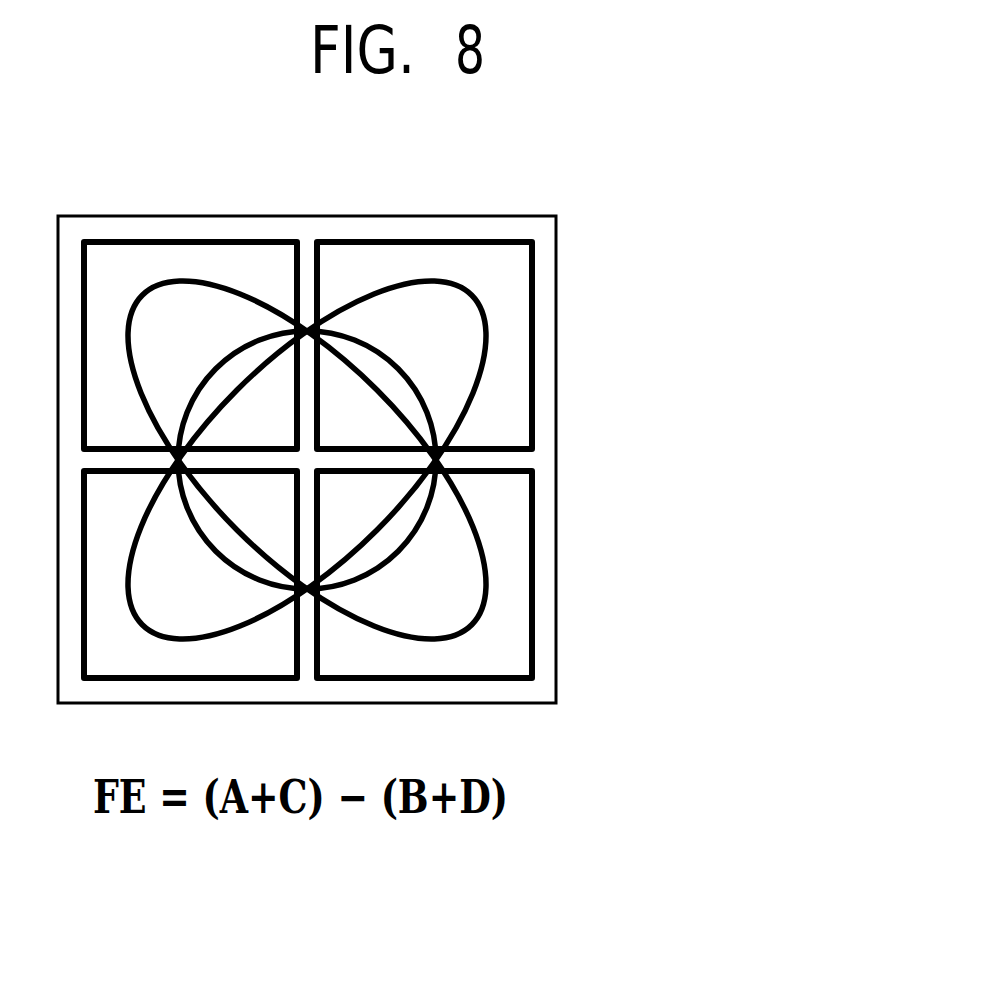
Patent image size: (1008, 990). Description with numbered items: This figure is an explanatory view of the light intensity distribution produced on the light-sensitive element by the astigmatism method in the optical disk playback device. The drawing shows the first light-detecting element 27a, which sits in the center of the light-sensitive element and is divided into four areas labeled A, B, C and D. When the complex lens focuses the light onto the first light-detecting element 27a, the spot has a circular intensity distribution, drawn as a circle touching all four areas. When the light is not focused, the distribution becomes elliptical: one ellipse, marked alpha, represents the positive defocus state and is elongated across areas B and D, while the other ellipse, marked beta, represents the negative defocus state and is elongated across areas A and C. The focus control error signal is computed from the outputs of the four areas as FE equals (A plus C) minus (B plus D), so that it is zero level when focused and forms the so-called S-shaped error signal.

The first light-detecting element 27a is at (557, 224).